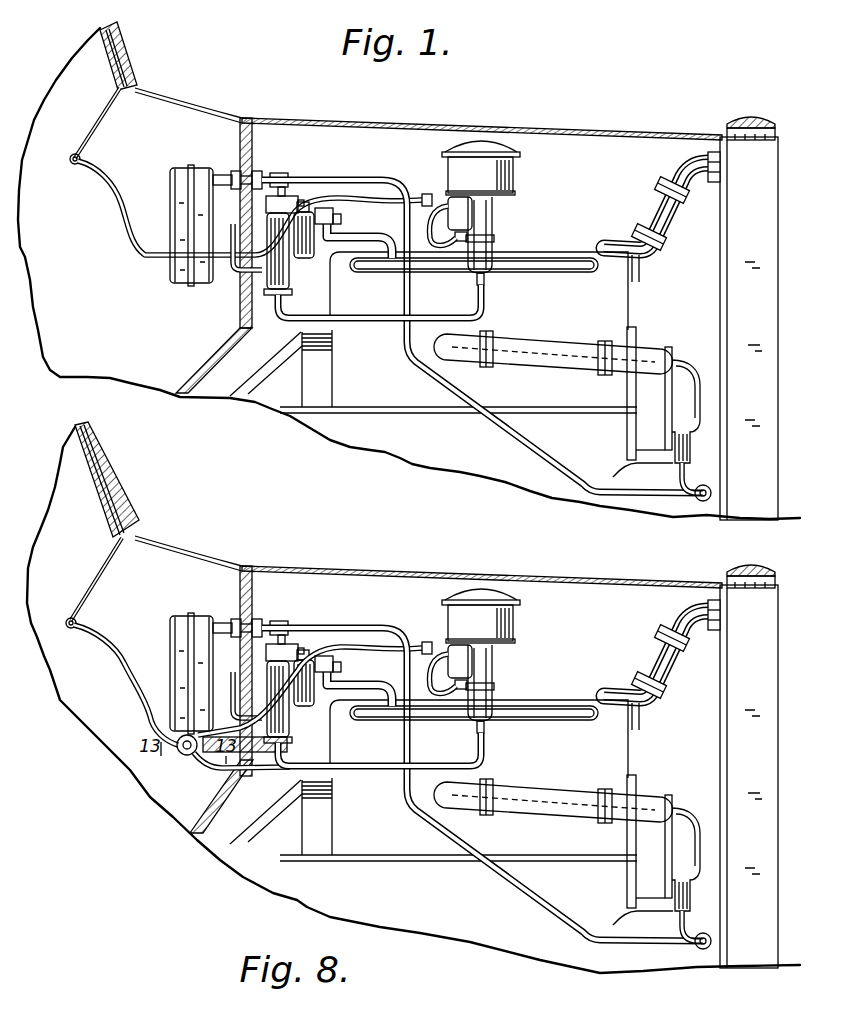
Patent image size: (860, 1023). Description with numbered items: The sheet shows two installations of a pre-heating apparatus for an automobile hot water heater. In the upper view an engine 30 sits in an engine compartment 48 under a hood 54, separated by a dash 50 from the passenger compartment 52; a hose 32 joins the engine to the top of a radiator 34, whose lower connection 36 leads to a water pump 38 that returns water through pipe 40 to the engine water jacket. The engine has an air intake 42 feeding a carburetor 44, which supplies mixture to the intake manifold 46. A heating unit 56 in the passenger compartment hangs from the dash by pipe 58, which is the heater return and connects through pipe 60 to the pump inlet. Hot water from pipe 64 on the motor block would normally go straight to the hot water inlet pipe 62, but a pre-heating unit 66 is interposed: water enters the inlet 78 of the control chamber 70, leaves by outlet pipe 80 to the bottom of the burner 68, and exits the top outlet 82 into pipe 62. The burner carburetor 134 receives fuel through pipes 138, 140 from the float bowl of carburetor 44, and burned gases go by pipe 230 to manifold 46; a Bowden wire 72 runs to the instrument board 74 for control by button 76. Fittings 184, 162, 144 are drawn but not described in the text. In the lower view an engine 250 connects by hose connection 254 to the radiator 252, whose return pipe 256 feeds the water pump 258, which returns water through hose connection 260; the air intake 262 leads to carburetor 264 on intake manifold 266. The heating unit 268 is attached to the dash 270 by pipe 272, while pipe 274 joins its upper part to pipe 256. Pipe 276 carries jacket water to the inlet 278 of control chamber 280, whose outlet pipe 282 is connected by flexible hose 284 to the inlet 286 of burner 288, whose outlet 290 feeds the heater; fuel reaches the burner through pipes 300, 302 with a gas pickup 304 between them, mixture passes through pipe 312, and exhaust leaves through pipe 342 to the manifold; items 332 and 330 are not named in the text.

In FIG. 1, the passenger compartment 52 is at (172, 132).
In FIG. 1, the engine compartment 48 is at (404, 120).
In FIG. 1, the hood 54 is at (576, 128).
In FIG. 1, the radiator 34 is at (760, 173).
In FIG. 1, the instrument board 74 is at (90, 143).
In FIG. 1, the button 76 is at (66, 154).
In FIG. 1, the Bowden wire 72 is at (128, 239).
In FIG. 1, the dash 50 is at (252, 150).
In FIG. 1, the heating unit 56 is at (180, 207).
In FIG. 1, the pipe 58 is at (233, 171).
In FIG. 1, the fitting 184 is at (279, 173).
In FIG. 1, the valve fitting 162 is at (298, 196).
In FIG. 1, the pipe 64 is at (348, 194).
In FIG. 1, the pipe 138 is at (418, 196).
In FIG. 1, the pipe 60 is at (518, 432).
In FIG. 1, the air intake 42 is at (500, 169).
In FIG. 1, the carburetor 44 is at (473, 216).
In FIG. 1, the pipe 140 is at (438, 250).
In FIG. 1, the hose 32 is at (655, 206).
In FIG. 1, the engine 30 is at (590, 312).
In FIG. 1, the intake manifold 46 is at (550, 271).
In FIG. 1, the carburetor 134 is at (352, 242).
In FIG. 1, the elbow 144 is at (328, 209).
In FIG. 1, the inlet 78 is at (306, 259).
In FIG. 1, the control chamber 70 is at (284, 295).
In FIG. 1, the outlet pipe 80 is at (315, 303).
In FIG. 1, the outlet 82 is at (247, 214).
In FIG. 1, the hot water inlet pipe 62 is at (232, 284).
In FIG. 1, the pre-heating unit 66 is at (265, 284).
In FIG. 1, the burner 68 is at (252, 306).
In FIG. 1, the pipe 230 is at (377, 324).
In FIG. 1, the water pump 38 is at (684, 372).
In FIG. 1, the pipe 40 is at (572, 362).
In FIG. 1, the lower connection 36 is at (712, 503).
In FIG. 8, the tie cord 332 is at (85, 577).
In FIG. 8, the knot 330 is at (57, 600).
In FIG. 8, the dash 270 is at (235, 656).
In FIG. 8, the flexible hose 284 is at (238, 785).
In FIG. 8, the radiator 252 is at (726, 766).
In FIG. 8, the burner 288 is at (127, 705).
In FIG. 8, the outlet 290 is at (261, 701).
In FIG. 8, the inlet 286 is at (189, 781).
In FIG. 8, the hot water heating unit 268 is at (165, 673).
In FIG. 8, the pipe 272 is at (214, 613).
In FIG. 8, the pipe 312 is at (279, 668).
In FIG. 8, the gas pickup 304 is at (441, 617).
In FIG. 8, the pipe 274 is at (334, 695).
In FIG. 8, the pipe 300 is at (387, 616).
In FIG. 8, the air intake 262 is at (511, 616).
In FIG. 8, the carburetor 264 is at (506, 685).
In FIG. 8, the pipe 302 is at (438, 692).
In FIG. 8, the hose connection 254 is at (651, 665).
In FIG. 8, the engine 250 is at (512, 739).
In FIG. 8, the intake manifold 266 is at (474, 701).
In FIG. 8, the control chamber 280 is at (359, 694).
In FIG. 8, the pipe 276 is at (339, 662).
In FIG. 8, the outlet pipe 282 is at (291, 711).
In FIG. 8, the inlet 278 is at (379, 733).
In FIG. 8, the pipe 342 is at (305, 816).
In FIG. 8, the water pump 258 is at (677, 842).
In FIG. 8, the hose connection 260 is at (553, 795).
In FIG. 8, the return pipe 256 is at (705, 958).